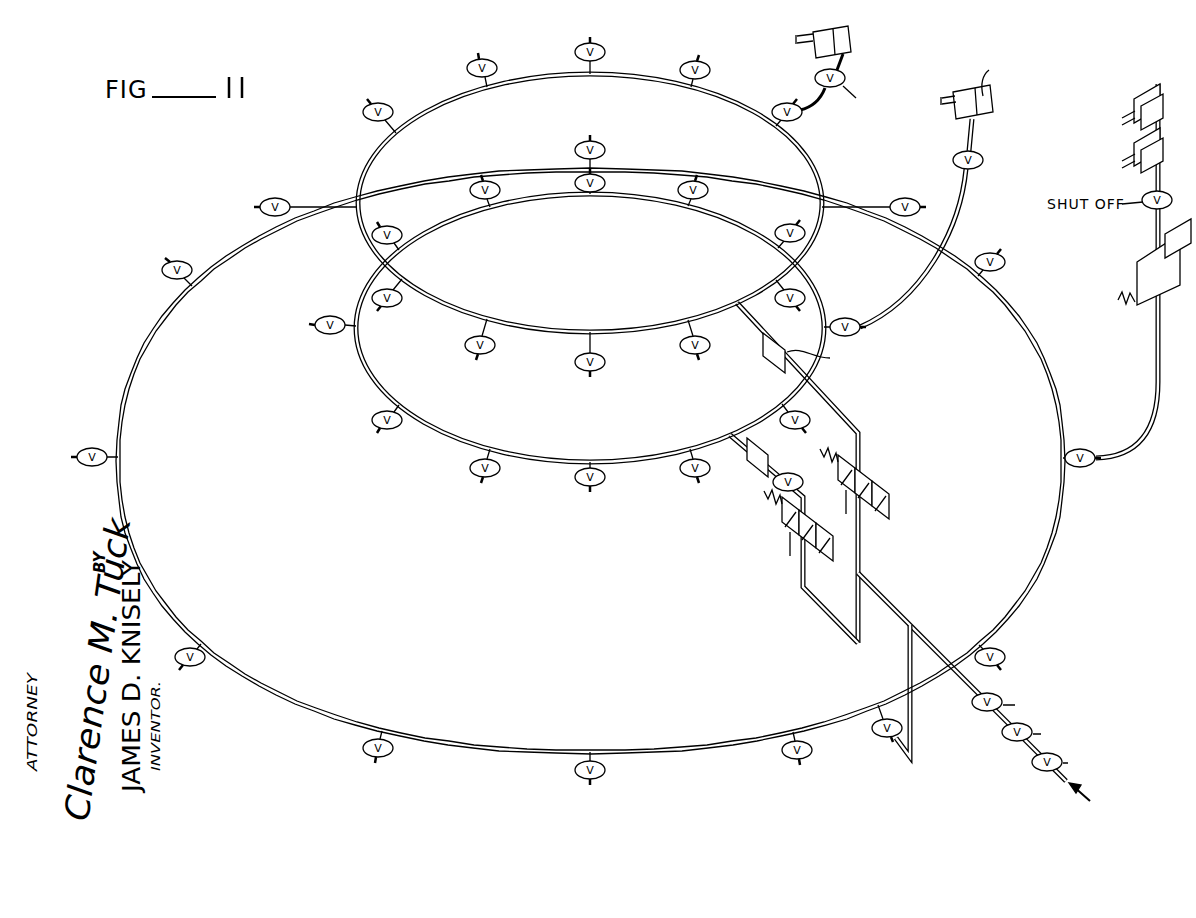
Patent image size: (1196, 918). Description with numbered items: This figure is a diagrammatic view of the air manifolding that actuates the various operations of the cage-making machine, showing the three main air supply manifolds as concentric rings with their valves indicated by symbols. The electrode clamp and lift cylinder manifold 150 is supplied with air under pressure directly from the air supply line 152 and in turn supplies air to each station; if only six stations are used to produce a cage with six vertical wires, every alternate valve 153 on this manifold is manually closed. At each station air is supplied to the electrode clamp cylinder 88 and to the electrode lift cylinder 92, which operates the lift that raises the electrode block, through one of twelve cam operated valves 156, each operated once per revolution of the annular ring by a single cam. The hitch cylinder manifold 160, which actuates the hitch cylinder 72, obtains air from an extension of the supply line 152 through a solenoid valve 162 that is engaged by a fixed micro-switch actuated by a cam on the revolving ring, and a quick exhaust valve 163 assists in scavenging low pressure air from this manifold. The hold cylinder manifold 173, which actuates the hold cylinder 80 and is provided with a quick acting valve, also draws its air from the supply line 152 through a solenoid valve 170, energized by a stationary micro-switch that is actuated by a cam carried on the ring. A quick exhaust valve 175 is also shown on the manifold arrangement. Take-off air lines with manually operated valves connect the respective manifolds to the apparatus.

The hold cylinder 80 is at (821, 45).
The hitch cylinder 72 is at (966, 108).
The electrode clamp cylinder 88 is at (1141, 105).
The electrode lift cylinder 92 is at (1139, 150).
The cam operated valve 156 is at (1147, 270).
The hold cylinder manifold 173 is at (442, 304).
The quick exhaust valve 175 is at (762, 356).
The hitch cylinder manifold 160 is at (455, 438).
The quick exhaust valve 163 is at (757, 465).
The solenoid valve 170 is at (872, 481).
The solenoid valve 162 is at (790, 518).
The valve 153 is at (163, 268).
The electrode clamp and lift cylinder manifold 150 is at (766, 731).
The air supply line 152 is at (1062, 777).